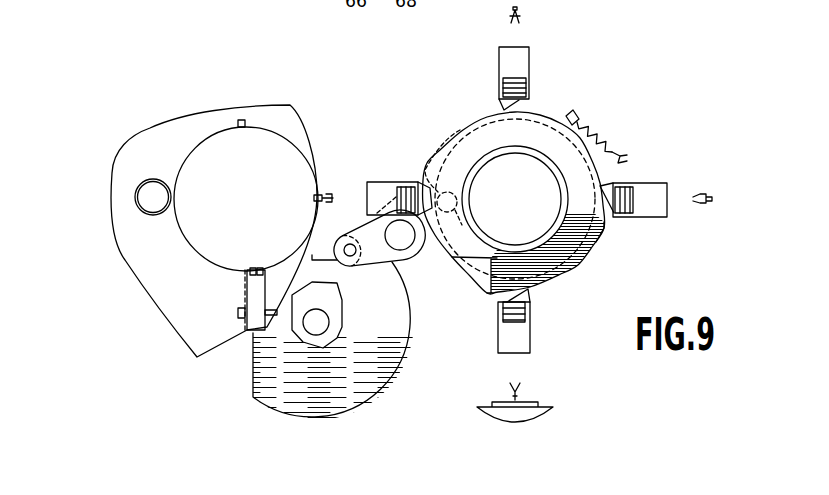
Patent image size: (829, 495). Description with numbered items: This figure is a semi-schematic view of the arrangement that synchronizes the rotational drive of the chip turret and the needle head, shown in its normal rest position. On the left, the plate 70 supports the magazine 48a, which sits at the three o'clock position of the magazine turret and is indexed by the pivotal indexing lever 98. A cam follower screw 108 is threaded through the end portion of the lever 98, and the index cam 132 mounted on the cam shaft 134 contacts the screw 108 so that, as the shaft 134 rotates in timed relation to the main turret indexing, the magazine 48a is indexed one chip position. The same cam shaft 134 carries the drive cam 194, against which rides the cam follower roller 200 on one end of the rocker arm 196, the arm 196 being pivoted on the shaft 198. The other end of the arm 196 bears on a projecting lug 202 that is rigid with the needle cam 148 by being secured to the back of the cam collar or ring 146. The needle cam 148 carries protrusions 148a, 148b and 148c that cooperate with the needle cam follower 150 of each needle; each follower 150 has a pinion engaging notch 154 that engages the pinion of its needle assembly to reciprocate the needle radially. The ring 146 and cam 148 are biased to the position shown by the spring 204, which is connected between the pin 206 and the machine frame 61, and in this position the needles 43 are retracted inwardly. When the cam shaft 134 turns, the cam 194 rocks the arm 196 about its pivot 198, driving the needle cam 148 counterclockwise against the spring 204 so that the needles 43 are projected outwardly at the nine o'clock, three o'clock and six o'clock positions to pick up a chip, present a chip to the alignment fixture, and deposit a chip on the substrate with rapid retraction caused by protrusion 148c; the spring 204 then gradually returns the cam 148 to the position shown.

The plate 70 is at (285, 117).
The magazine 48a is at (298, 152).
The indexing lever 98 is at (250, 292).
The cam follower screw 108 is at (272, 313).
The index cam 132 is at (336, 289).
The cam shaft 134 is at (325, 332).
The drive cam 194 is at (370, 404).
The rocker arm 196 is at (408, 259).
The shaft 198 is at (408, 241).
The cam follower roller 200 is at (333, 242).
The cam collar 146 is at (472, 133).
The needle cam 148 is at (480, 115).
The protrusion 148a is at (423, 170).
The protrusion 148b is at (602, 227).
The protrusion 148c is at (495, 293).
The needle cam follower 150 is at (515, 107).
The pinion engaging notch 154 is at (625, 214).
The projecting lug 202 is at (470, 220).
The spring 204 is at (606, 143).
The pin 206 is at (575, 112).
The machine frame 61 is at (623, 161).
The needles 43 is at (717, 168).